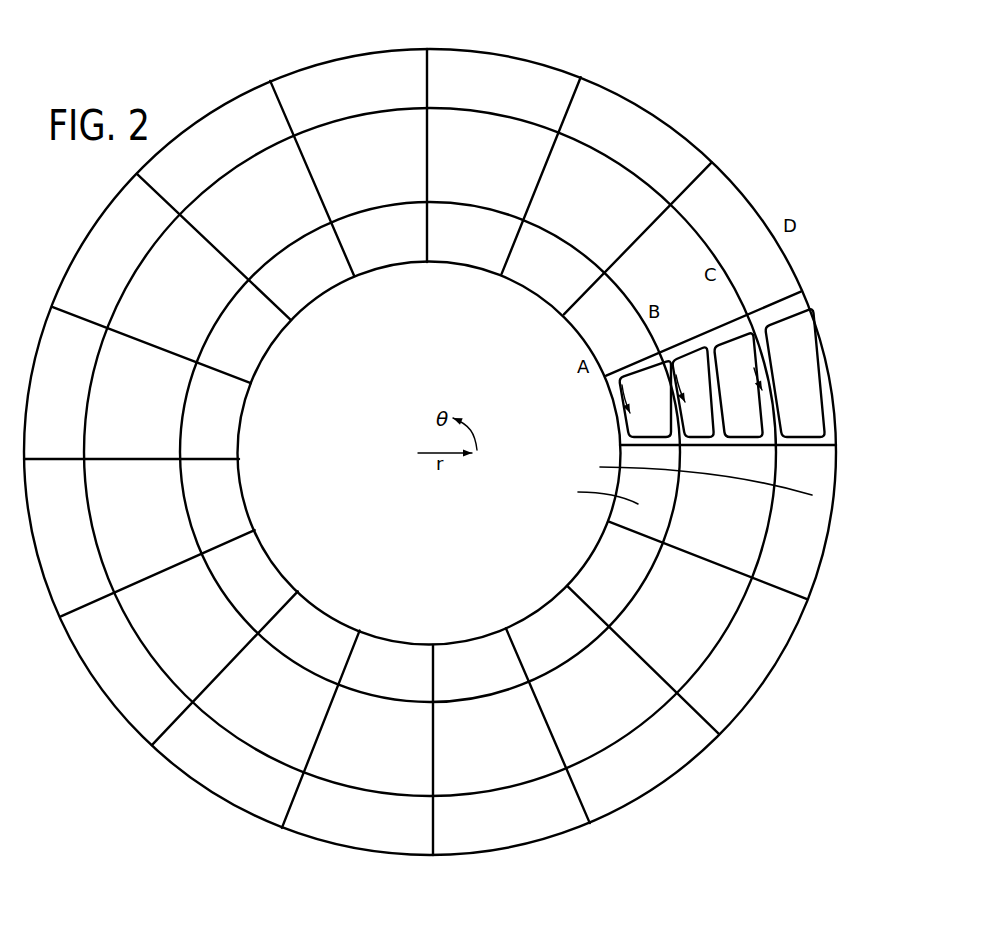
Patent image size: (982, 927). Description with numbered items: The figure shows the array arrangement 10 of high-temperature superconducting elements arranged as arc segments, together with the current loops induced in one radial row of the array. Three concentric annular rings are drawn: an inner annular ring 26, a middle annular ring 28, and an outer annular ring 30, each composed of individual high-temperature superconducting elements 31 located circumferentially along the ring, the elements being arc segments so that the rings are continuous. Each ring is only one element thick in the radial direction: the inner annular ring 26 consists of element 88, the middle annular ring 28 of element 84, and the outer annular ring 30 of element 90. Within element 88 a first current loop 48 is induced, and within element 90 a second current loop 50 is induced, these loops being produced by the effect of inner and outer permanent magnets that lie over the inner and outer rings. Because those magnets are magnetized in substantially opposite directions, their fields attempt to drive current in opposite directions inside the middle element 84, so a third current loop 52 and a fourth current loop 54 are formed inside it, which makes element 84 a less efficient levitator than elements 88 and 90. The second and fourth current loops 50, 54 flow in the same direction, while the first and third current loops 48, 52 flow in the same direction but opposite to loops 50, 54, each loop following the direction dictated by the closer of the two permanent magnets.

The electrical machine stator assembly 10 is at (243, 4).
The inner annular ring 26 is at (385, 240).
The middle annular ring 28 is at (277, 220).
The outer annular ring 30 is at (222, 148).
The high-temperature superconducting element 31 is at (318, 648).
The first current loop 48 is at (630, 432).
The second current loop 50 is at (818, 375).
The third current loop 52 is at (662, 357).
The fourth current loop 54 is at (740, 335).
The middle element 84 is at (608, 706).
The inner element 88 is at (595, 493).
The outer element 90 is at (692, 475).